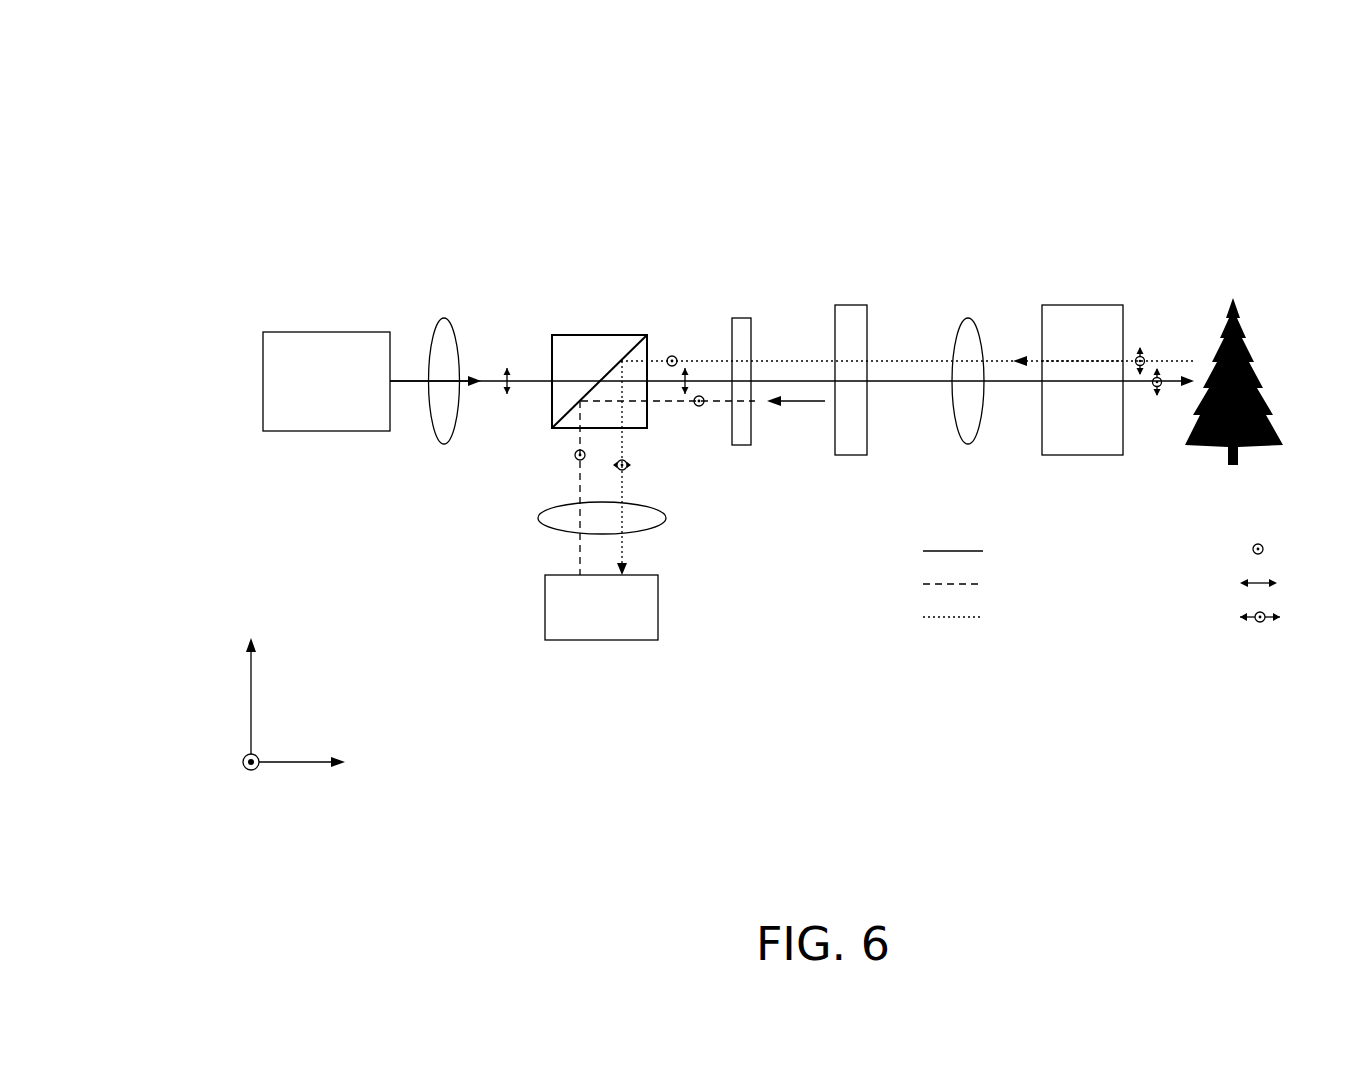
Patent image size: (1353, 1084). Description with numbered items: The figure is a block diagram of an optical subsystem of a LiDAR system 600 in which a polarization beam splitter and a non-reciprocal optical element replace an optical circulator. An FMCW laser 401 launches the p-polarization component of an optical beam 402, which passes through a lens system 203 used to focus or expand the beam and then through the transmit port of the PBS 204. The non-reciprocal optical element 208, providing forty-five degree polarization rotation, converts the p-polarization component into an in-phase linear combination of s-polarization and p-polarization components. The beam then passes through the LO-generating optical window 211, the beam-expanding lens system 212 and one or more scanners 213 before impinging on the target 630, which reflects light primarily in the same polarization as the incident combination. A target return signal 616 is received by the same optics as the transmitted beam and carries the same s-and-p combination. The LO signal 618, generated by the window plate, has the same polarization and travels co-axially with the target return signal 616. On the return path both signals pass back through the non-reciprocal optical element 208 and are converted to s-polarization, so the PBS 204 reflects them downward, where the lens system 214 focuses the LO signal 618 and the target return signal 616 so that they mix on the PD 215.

The LiDAR system 600 is at (182, 93).
The FMCW laser 401 is at (305, 335).
The optical beam 402 is at (423, 383).
The lens system 203 is at (430, 348).
The PBS 204 is at (555, 362).
The non-reciprocal optical element 208 is at (752, 325).
The optical window 211 is at (867, 317).
The lens system 212 is at (982, 337).
The scanners 213 is at (1125, 320).
The lens system 214 is at (548, 512).
The PD 215 is at (545, 593).
The target return signal 616 is at (1063, 365).
The LO signal 618 is at (795, 403).
The target 630 is at (1252, 343).